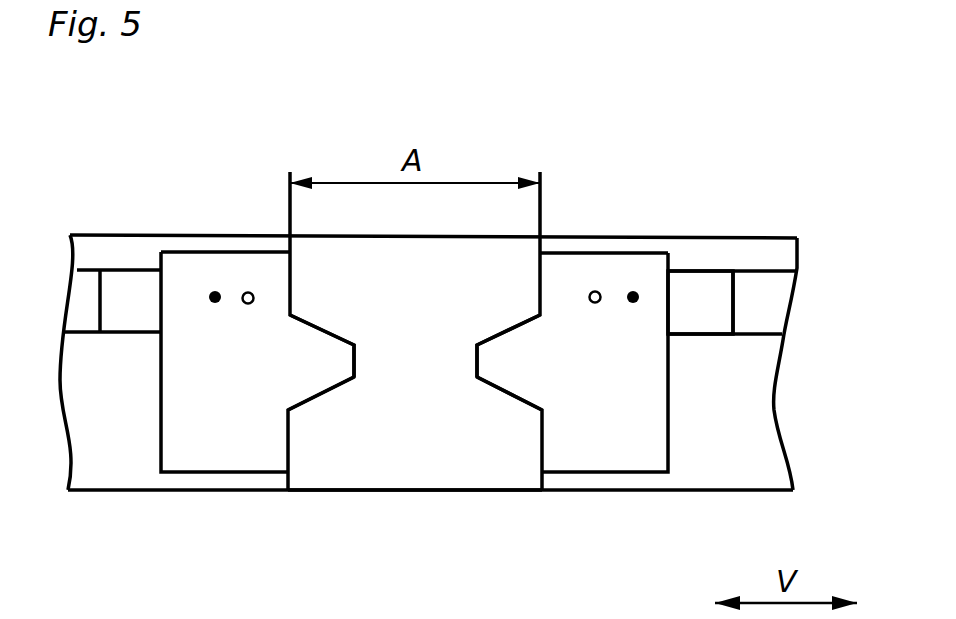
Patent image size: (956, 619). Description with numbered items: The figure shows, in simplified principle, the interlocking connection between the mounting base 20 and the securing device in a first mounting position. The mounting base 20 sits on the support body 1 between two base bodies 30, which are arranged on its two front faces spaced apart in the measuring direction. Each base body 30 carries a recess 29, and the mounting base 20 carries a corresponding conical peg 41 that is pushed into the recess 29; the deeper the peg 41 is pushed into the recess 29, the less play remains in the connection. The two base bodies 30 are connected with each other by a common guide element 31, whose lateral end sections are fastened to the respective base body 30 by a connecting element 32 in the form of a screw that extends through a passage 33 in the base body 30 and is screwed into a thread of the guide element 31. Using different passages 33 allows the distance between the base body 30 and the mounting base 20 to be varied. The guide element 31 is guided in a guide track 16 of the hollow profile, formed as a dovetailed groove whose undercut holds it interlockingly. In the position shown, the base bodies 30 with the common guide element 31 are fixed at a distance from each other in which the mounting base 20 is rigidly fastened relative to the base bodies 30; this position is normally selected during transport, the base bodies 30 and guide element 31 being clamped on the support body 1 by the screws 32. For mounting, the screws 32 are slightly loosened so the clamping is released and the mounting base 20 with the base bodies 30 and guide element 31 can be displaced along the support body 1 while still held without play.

The support body 1 is at (768, 452).
The guide track 16 is at (758, 282).
The mounting base 20 is at (421, 480).
The recess 29 is at (342, 383).
The base body 30 is at (195, 458).
The guide element 31 is at (710, 287).
The connecting element 32 is at (215, 290).
The passage 33 is at (249, 291).
The peg 41 is at (325, 378).